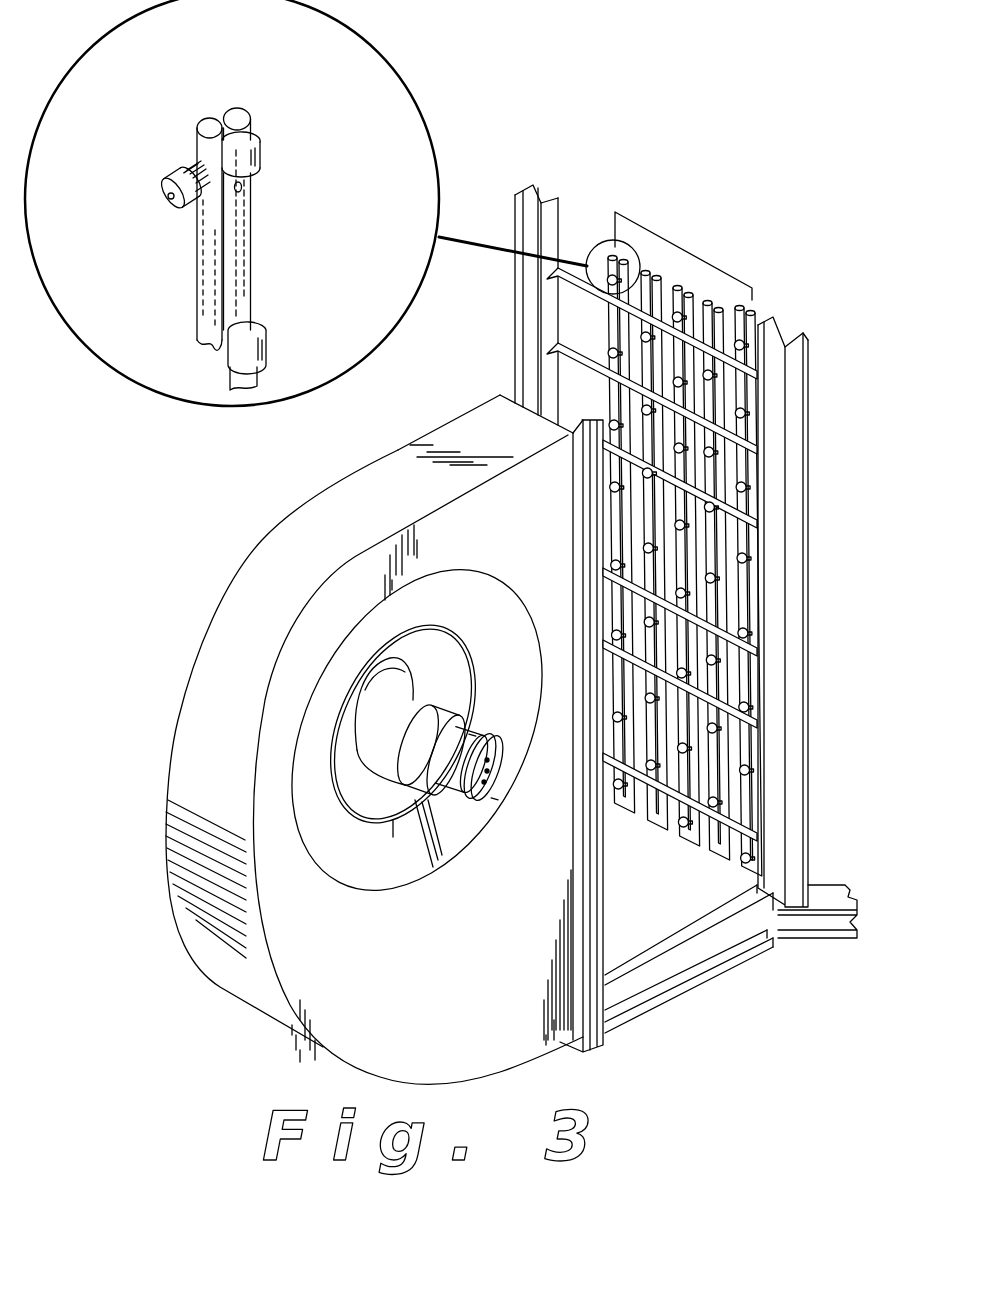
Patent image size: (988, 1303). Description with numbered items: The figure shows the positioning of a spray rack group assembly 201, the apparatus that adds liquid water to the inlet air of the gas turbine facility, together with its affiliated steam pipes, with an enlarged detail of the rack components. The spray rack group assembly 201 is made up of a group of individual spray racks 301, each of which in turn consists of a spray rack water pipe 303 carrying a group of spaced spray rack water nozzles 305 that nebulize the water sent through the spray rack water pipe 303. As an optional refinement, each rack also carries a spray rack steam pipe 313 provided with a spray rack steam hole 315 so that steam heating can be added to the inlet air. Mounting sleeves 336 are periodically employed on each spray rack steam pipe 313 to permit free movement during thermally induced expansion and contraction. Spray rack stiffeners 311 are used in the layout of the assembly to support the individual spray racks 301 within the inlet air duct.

In FIG. 3, the spray rack group assembly 201 is at (687, 252).
In FIG. 3, the individual spray rack 301 is at (607, 320).
In FIG. 3A, the individual spray rack 301 is at (207, 103).
In FIG. 3A, the spray rack water pipe 303 is at (213, 276).
In FIG. 3, the spray rack water nozzle 305 is at (606, 242).
In FIG. 3A, the spray rack water nozzle 305 is at (175, 213).
In FIG. 3, the spray rack stiffener 311 is at (582, 357).
In FIG. 3A, the spray rack steam pipe 313 is at (243, 285).
In FIG. 3A, the spray rack steam hole 315 is at (243, 189).
In FIG. 3A, the mounting sleeve 336 is at (258, 152).